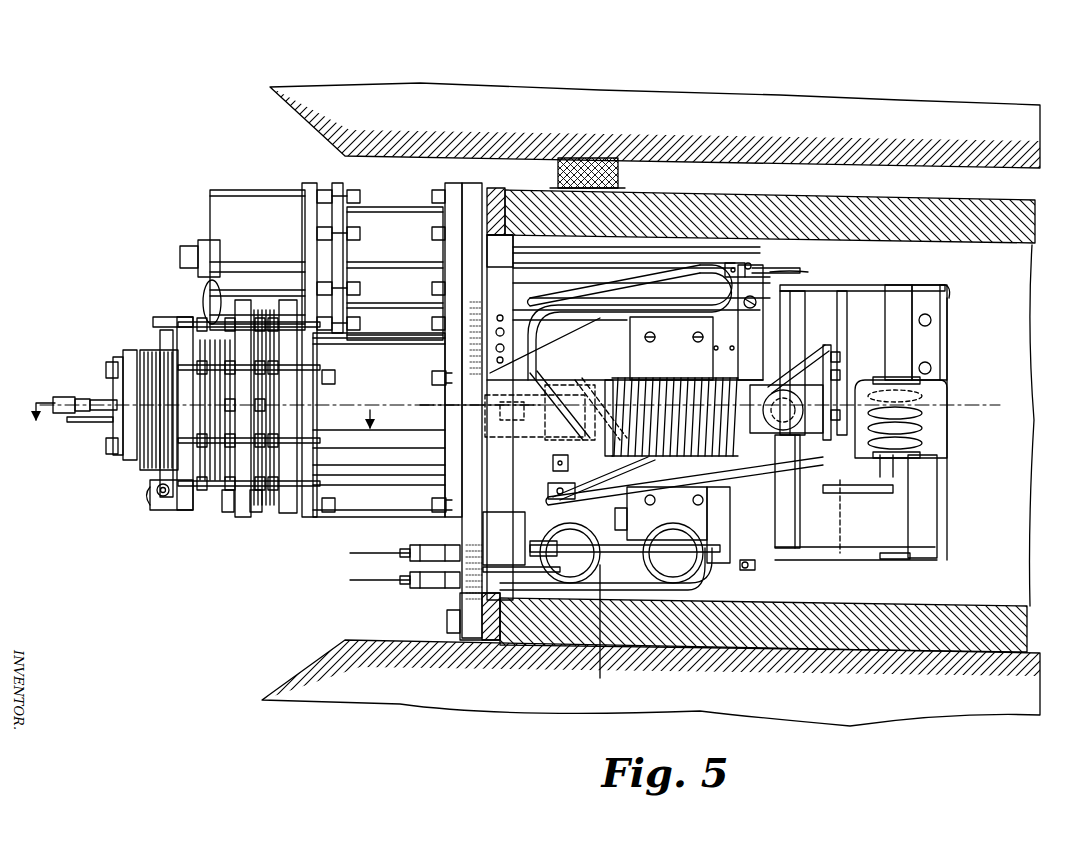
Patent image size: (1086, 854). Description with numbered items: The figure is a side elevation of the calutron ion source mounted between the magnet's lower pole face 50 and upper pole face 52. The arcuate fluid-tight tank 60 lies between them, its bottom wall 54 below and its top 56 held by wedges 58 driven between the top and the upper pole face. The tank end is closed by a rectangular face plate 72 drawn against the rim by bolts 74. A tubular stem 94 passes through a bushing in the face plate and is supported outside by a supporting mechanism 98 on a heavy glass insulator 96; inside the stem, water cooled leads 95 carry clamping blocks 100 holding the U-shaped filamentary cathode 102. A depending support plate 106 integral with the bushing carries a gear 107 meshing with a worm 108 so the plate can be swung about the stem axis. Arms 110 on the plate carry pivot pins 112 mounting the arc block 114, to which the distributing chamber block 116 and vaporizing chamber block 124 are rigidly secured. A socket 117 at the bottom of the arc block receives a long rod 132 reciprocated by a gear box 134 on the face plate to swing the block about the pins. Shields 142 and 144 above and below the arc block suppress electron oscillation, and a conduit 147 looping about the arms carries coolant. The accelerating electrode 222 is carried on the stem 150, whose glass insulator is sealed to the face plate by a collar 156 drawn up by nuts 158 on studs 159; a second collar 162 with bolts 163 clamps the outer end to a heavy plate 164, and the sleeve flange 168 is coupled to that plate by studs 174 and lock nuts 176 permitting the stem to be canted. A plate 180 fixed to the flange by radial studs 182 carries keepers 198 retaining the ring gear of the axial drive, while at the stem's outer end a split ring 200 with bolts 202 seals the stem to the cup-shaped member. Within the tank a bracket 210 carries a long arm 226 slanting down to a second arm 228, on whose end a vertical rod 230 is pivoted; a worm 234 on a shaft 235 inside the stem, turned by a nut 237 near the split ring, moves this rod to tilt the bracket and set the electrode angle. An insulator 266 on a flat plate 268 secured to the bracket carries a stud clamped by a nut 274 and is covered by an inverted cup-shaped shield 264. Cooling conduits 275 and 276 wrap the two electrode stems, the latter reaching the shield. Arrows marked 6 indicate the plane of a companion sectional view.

The lower pole face 50 is at (1041, 678).
The upper pole face 52 is at (1041, 163).
The bottom wall 54 is at (1030, 630).
The top 56 is at (1037, 220).
The wedges 58 is at (620, 178).
The tank 60 is at (522, 648).
The face plate 72 is at (465, 603).
The bolts 74 is at (447, 621).
The tubular stem member 94 is at (192, 243).
The water cooled leads 95 is at (742, 266).
The glass insulator 96 is at (412, 207).
The supporting mechanism 98 is at (258, 188).
The clamping blocks 100 is at (752, 268).
The filamentary cathode 102 is at (806, 272).
The support plate 106 is at (540, 254).
The gear 107 is at (483, 549).
The worm 108 is at (528, 531).
The arm 110 is at (575, 329).
The pivot pin 112 is at (768, 301).
The arc block 114 is at (782, 288).
The distributing chamber block 116 is at (775, 551).
The socket 117 is at (745, 568).
The vaporizing chamber block 124 is at (696, 353).
The rod 132 is at (583, 630).
The gear box 134 is at (458, 582).
The shield 142 is at (777, 268).
The shield 144 is at (785, 586).
The conduit 147 is at (644, 292).
The stem 150 is at (595, 379).
The collar 156 is at (445, 512).
The nuts 158 is at (433, 380).
The studs 159 is at (432, 373).
The collar 162 is at (312, 522).
The bolts 163 is at (334, 376).
The plate 164 is at (283, 518).
The annular flange 168 is at (243, 518).
The studs 174 is at (224, 488).
The lock nuts 176 is at (262, 520).
The plate 180 is at (188, 317).
The studs 182 is at (210, 486).
The keepers 198 is at (158, 317).
The split ring 200 is at (128, 350).
The bolts 202 is at (112, 363).
The bracket 210 is at (838, 350).
The accelerating electrode 222 is at (795, 532).
The arm 226 is at (803, 357).
The arm 228 is at (805, 478).
The vertical rod 230 is at (563, 475).
The worm 234 is at (576, 380).
The shaft 235 is at (464, 405).
The nut 237 is at (58, 397).
The shield 264 is at (934, 397).
The insulator 266 is at (921, 421).
The plate 268 is at (942, 460).
The nut 274 is at (884, 380).
The conduit 275 is at (96, 398).
The conduit 276 is at (946, 379).
The section line 6 is at (202, 425).